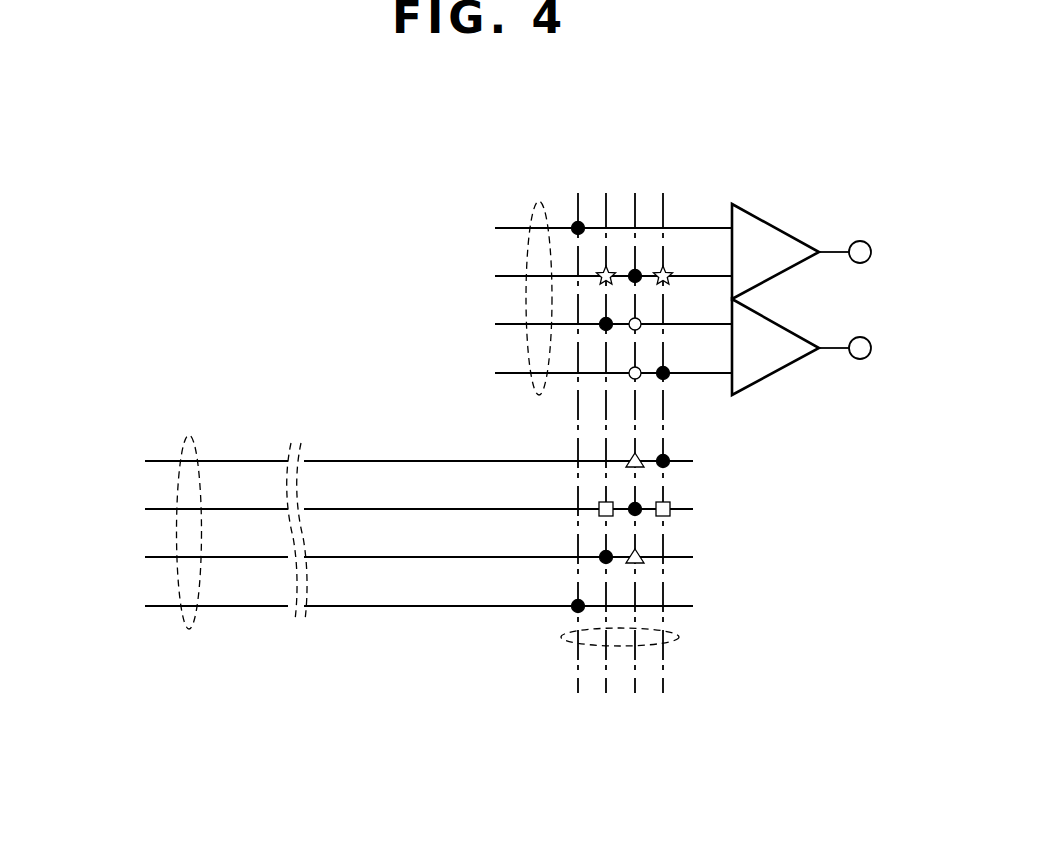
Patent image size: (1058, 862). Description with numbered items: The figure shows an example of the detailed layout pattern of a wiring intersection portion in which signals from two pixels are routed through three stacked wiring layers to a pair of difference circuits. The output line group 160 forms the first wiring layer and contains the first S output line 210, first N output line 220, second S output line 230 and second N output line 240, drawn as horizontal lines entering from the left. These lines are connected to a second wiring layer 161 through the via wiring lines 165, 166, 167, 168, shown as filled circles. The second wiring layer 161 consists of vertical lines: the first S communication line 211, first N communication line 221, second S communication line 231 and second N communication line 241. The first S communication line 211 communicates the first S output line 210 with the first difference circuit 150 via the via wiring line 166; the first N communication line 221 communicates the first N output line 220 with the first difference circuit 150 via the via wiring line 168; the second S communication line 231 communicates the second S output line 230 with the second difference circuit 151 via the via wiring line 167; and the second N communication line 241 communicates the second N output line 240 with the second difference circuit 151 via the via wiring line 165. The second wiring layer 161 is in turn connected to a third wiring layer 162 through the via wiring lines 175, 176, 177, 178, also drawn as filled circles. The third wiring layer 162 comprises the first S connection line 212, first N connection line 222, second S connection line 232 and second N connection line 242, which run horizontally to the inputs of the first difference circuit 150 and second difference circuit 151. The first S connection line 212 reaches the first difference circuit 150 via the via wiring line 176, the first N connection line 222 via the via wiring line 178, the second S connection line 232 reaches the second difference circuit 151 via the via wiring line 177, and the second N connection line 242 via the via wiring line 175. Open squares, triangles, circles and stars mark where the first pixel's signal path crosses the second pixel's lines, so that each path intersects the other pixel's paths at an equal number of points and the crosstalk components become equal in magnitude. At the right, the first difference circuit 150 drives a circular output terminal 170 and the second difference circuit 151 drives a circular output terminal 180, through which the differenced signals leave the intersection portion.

The first difference circuit 150 is at (767, 222).
The second difference circuit 151 is at (768, 376).
The output line group 160 is at (197, 448).
The second wiring layer 161 is at (673, 629).
The third wiring layer 162 is at (530, 203).
The via wiring line 165 is at (663, 461).
The via wiring line 166 is at (635, 509).
The via wiring line 167 is at (606, 557).
The via wiring line 168 is at (578, 606).
The first output terminal 170 is at (862, 241).
The via wiring line 175 is at (663, 373).
The via wiring line 176 is at (635, 276).
The via wiring line 177 is at (606, 324).
The via wiring line 178 is at (578, 228).
The second output terminal 180 is at (862, 359).
The first S output line 210 is at (165, 509).
The first S communication line 211 is at (635, 684).
The first S connection line 212 is at (515, 276).
The first N output line 220 is at (165, 606).
The first N communication line 221 is at (578, 676).
The first N connection line 222 is at (515, 228).
The second S output line 230 is at (165, 557).
The second S communication line 231 is at (605, 684).
The second S connection line 232 is at (515, 324).
The second N output line 240 is at (165, 461).
The second N communication line 241 is at (663, 676).
The second N connection line 242 is at (515, 373).